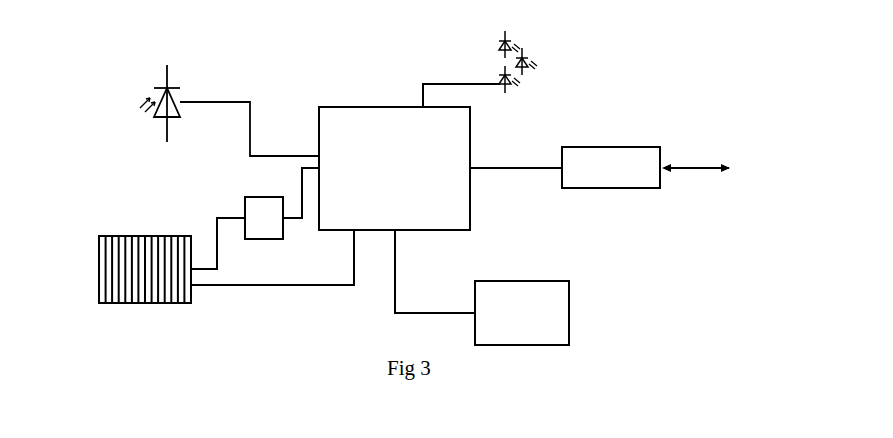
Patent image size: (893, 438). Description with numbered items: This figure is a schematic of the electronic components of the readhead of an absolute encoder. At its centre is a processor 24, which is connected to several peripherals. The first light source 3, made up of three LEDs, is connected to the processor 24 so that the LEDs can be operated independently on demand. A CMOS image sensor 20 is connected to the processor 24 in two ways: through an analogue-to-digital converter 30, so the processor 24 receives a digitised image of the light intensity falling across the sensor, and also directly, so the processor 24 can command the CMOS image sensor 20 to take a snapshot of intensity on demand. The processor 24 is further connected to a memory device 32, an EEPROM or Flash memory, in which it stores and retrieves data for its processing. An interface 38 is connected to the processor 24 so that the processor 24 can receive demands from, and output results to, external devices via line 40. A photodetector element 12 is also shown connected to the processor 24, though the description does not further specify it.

The photodiode detector 12 is at (125, 107).
The first light source 3 is at (545, 63).
The CMOS image sensor 20 is at (112, 222).
The processor 24 is at (394, 168).
The analogue-to-digital converter 30 is at (255, 218).
The memory device 32 is at (482, 287).
The interface 38 is at (565, 167).
The line 40 is at (687, 160).